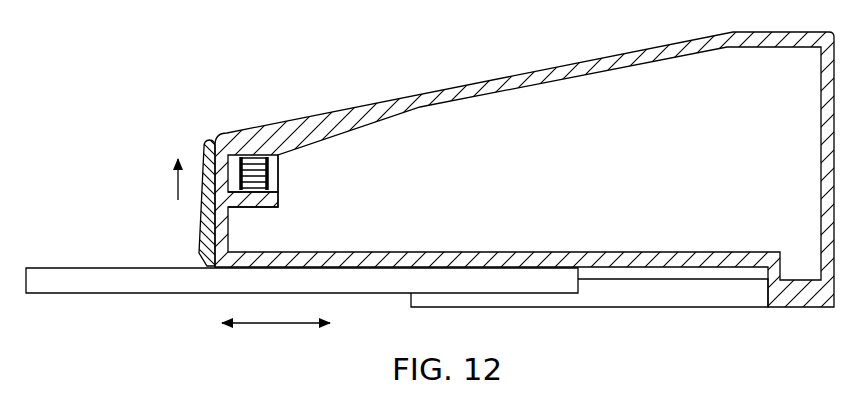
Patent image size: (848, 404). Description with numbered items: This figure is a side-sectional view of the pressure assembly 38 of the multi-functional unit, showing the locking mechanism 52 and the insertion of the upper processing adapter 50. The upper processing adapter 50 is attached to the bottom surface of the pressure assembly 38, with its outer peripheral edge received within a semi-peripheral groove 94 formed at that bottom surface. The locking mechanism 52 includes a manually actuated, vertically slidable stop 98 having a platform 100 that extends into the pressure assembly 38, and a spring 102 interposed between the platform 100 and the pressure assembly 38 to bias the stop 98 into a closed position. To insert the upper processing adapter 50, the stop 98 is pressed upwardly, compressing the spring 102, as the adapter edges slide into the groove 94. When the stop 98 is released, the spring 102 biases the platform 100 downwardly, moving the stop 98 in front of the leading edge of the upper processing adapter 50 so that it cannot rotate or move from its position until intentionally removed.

The pressure assembly 38 is at (498, 87).
The upper processing adapter 50 is at (72, 292).
The locking mechanism 52 is at (172, 143).
The semi-peripheral groove 94 is at (628, 294).
The vertically slidable stop 98 is at (200, 230).
The platform 100 is at (277, 203).
The spring 102 is at (258, 167).